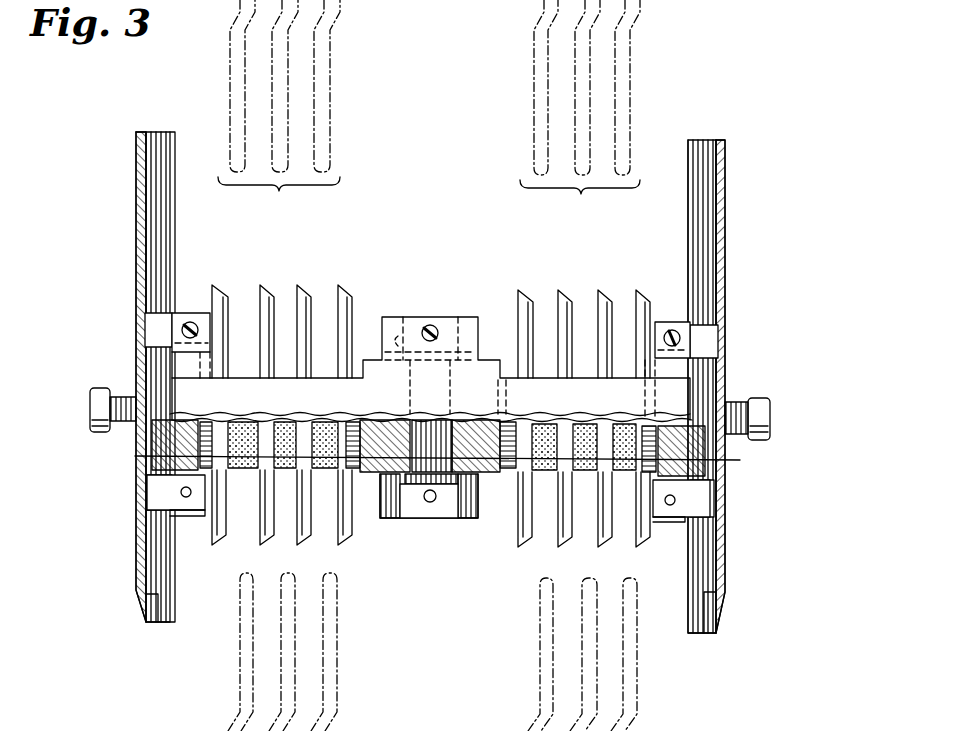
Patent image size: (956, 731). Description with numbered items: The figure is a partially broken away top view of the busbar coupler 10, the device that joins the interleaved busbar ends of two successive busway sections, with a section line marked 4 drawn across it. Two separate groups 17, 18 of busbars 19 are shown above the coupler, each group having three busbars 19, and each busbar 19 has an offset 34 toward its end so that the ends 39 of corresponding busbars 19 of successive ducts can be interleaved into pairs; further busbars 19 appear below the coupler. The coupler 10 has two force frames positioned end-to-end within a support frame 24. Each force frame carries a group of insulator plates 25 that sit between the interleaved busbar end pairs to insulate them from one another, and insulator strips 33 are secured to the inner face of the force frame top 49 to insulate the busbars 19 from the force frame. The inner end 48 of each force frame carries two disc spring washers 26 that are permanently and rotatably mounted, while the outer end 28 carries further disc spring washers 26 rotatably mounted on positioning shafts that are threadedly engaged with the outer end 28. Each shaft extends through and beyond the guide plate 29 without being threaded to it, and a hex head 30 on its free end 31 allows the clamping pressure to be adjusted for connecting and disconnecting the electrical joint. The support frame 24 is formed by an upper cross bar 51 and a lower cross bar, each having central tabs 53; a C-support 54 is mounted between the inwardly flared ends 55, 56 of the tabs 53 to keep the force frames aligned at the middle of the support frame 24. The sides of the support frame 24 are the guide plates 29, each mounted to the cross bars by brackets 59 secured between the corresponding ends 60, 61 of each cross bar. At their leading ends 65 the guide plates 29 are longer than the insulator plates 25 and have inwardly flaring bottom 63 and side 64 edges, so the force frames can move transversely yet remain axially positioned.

The section line 4- 4 is at (60, 420).
The busbar coupler 10 is at (484, 274).
The group of busbars 17 is at (279, 104).
The group of busbars 18 is at (580, 111).
The busbars 19 is at (240, 627).
The support frame 24 is at (334, 393).
The insulator plates 25 is at (304, 310).
The disc spring washers 26 is at (496, 440).
The outer end of force frame 28 is at (132, 468).
The guide plates 29 is at (132, 253).
The hex head 30 is at (95, 432).
The free end of shaft 31 is at (113, 396).
The insulator strips 33 is at (334, 466).
The offset 34 is at (342, 28).
The ends of busbars 39 is at (322, 182).
The inner end of force frame 48 is at (382, 462).
The top of force frame 49 is at (579, 399).
The upper cross bar 51 is at (542, 390).
The tabs 53 is at (468, 330).
The C-support 54 is at (396, 333).
The inwardly flared end of tab 55 is at (437, 326).
The inwardly flared end of tab 56 is at (420, 520).
The brackets 59 is at (150, 330).
The end of cross bar 60 is at (192, 312).
The end of cross bar 61 is at (195, 515).
The bottom edge of guide plate 63 is at (140, 632).
The side edge of guide plate 64 is at (140, 612).
The leading ends of guide plates 65 is at (148, 628).